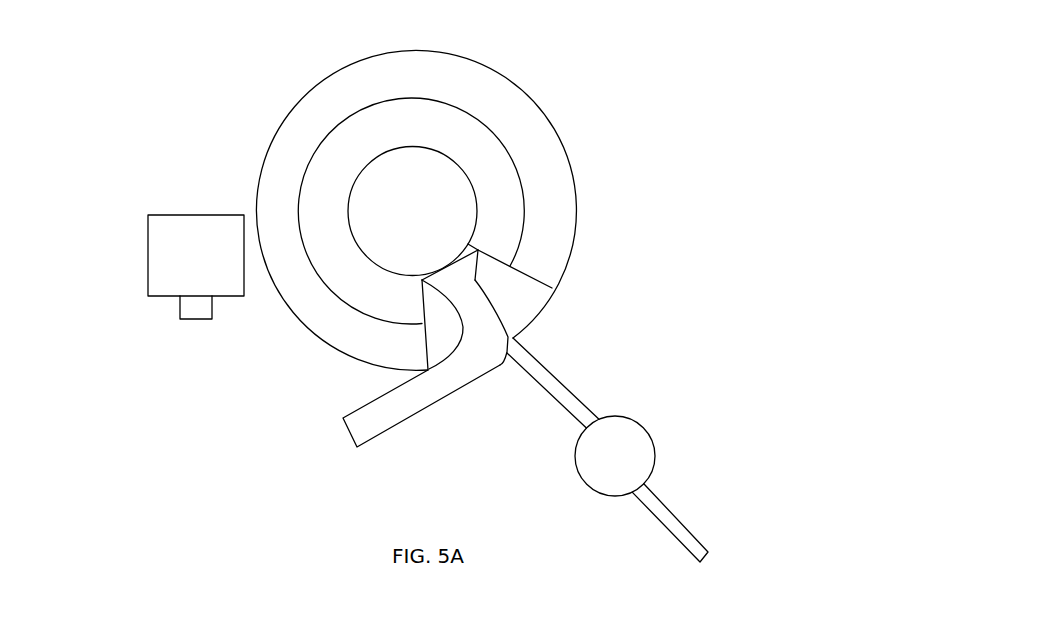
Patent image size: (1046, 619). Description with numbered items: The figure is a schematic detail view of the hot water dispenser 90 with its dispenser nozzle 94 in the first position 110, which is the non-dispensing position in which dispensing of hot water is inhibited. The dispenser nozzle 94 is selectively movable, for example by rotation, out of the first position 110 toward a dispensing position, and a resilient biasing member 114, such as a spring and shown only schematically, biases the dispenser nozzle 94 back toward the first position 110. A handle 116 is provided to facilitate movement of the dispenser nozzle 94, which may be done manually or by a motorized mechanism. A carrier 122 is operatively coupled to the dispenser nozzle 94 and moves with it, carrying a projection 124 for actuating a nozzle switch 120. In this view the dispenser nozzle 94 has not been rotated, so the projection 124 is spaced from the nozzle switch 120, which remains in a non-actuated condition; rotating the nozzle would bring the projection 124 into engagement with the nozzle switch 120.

The hot water dispenser 90 is at (608, 113).
The dispenser nozzle 94 is at (638, 452).
The first position 110 is at (608, 355).
The resilient biasing member 114 is at (485, 163).
The handle 116 is at (693, 543).
The nozzle switch 120 is at (173, 259).
The carrier 122 is at (550, 227).
The projection 124 is at (380, 418).